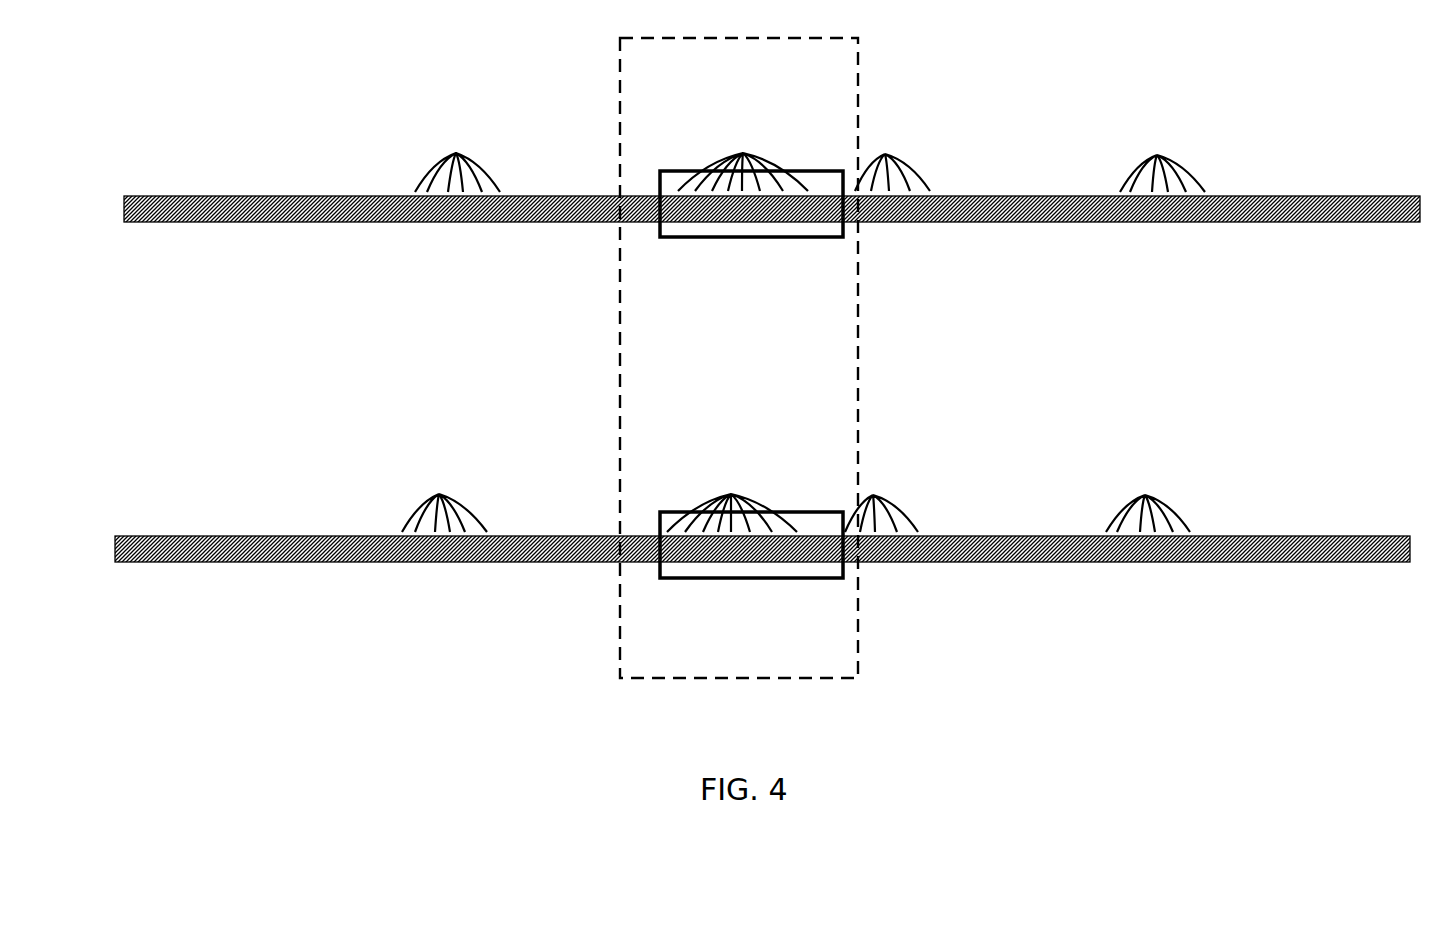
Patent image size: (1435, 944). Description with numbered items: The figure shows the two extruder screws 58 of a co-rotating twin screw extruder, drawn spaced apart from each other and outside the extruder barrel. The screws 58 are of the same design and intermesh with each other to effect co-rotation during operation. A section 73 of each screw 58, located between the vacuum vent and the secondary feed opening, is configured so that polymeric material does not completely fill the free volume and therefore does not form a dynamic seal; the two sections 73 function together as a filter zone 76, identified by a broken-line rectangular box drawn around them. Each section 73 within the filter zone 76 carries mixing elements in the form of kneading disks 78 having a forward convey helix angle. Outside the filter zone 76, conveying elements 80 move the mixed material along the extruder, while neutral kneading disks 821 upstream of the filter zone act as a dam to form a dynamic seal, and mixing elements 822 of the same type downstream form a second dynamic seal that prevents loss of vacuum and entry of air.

The extruder screws 58 is at (183, 193).
The filter zone 76 is at (703, 38).
The section of extruder screw 73 is at (660, 170).
The kneading disks 78 is at (737, 329).
The conveying elements 80 is at (887, 329).
The neutral kneading disks 821 is at (451, 329).
The mixing elements 822 is at (1155, 329).